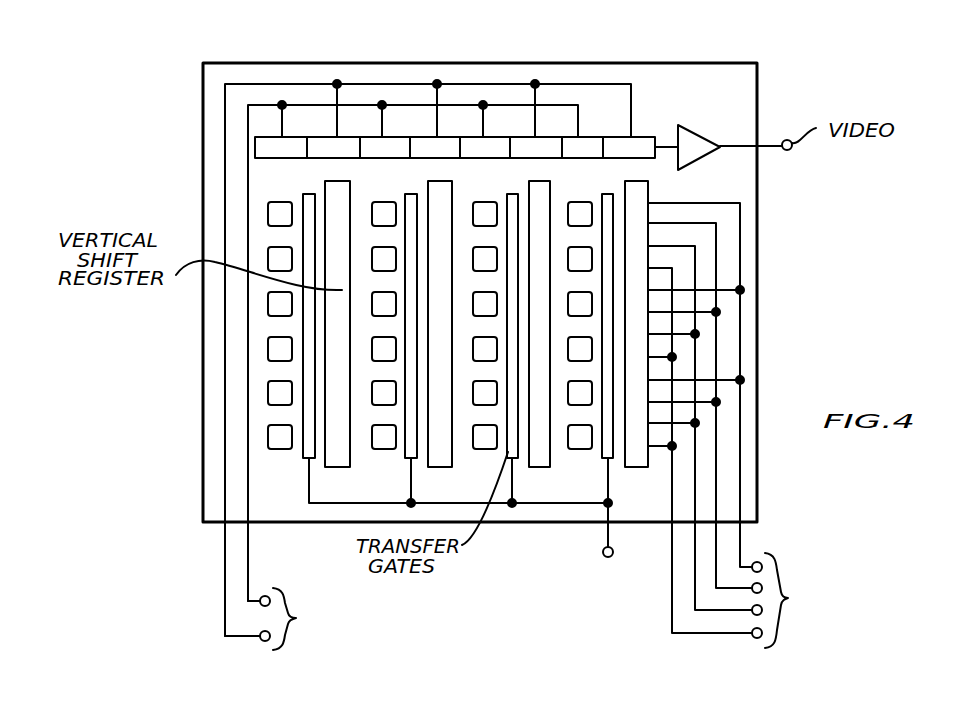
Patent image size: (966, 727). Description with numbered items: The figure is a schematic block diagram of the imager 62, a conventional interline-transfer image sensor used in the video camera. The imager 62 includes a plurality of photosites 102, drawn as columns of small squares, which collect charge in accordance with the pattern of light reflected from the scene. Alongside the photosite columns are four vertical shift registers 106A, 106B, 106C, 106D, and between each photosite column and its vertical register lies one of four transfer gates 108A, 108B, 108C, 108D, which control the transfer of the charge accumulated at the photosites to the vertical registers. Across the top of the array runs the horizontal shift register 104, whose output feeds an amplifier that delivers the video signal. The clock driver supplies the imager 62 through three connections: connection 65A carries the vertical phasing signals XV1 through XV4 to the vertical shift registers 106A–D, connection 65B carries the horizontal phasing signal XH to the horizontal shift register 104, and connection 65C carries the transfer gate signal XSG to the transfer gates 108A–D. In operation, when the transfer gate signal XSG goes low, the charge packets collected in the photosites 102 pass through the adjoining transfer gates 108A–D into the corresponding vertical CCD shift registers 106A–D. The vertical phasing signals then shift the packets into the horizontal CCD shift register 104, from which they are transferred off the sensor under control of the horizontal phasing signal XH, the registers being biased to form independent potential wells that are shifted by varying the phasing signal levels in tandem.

The imager 62 is at (758, 81).
The horizontal shift register 104 is at (271, 148).
The photosites 102 is at (578, 201).
The vertical shift register 106A is at (636, 452).
The vertical shift register 106B is at (546, 186).
The vertical shift register 106C is at (437, 190).
The vertical shift register 106D is at (334, 190).
The transfer gate 108A is at (606, 207).
The transfer gate 108B is at (513, 194).
The transfer gate 108C is at (412, 194).
The transfer gate 108D is at (307, 194).
The connection 65A is at (731, 646).
The connection 65B is at (248, 553).
The connection 65C is at (606, 536).